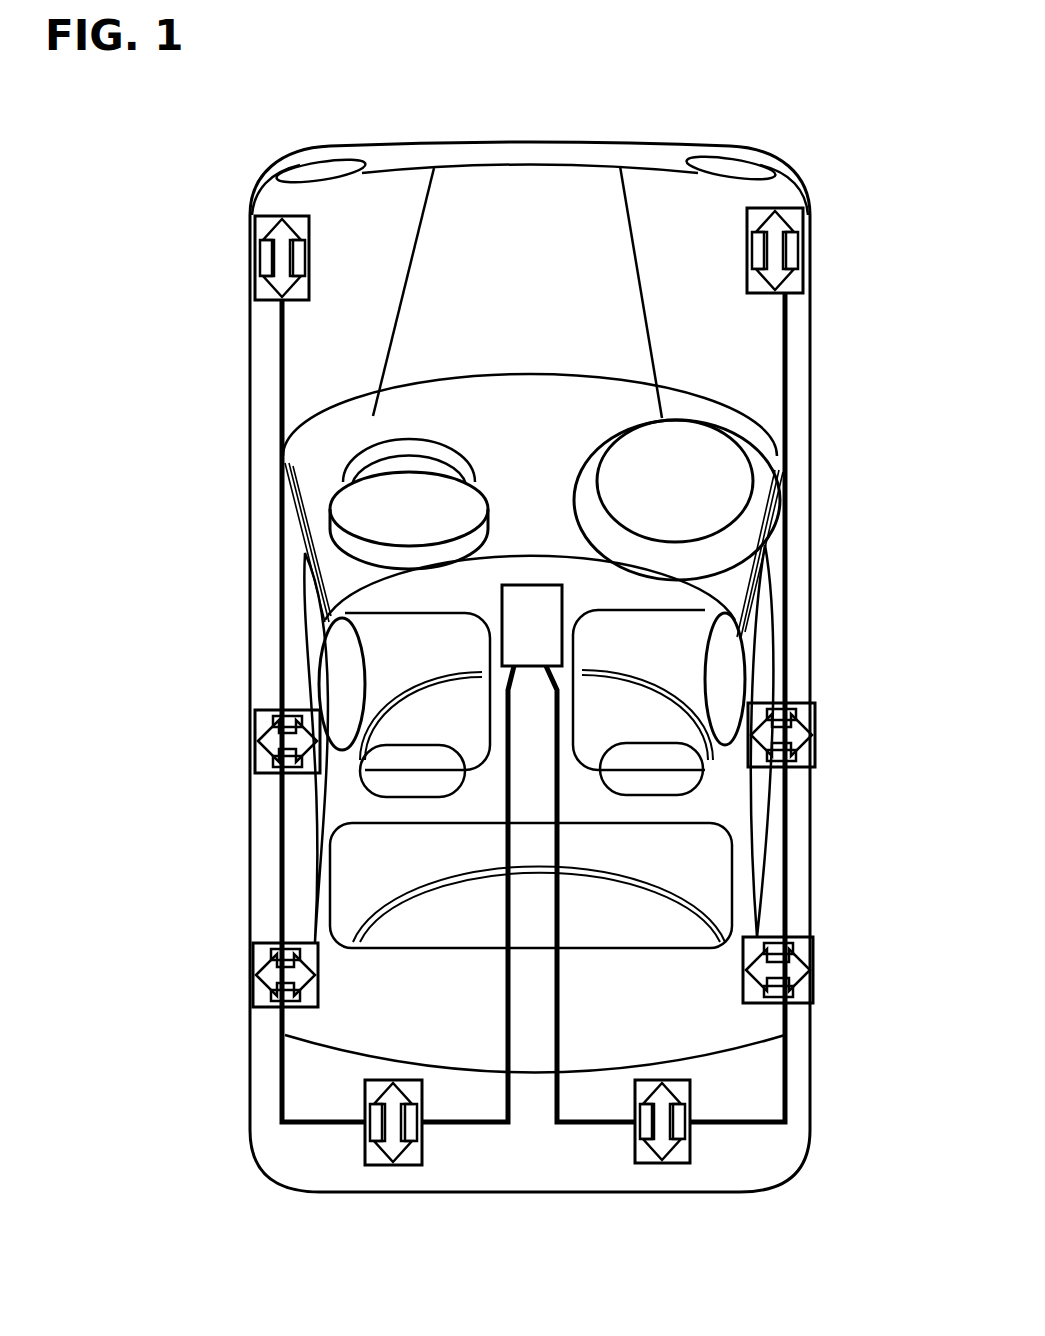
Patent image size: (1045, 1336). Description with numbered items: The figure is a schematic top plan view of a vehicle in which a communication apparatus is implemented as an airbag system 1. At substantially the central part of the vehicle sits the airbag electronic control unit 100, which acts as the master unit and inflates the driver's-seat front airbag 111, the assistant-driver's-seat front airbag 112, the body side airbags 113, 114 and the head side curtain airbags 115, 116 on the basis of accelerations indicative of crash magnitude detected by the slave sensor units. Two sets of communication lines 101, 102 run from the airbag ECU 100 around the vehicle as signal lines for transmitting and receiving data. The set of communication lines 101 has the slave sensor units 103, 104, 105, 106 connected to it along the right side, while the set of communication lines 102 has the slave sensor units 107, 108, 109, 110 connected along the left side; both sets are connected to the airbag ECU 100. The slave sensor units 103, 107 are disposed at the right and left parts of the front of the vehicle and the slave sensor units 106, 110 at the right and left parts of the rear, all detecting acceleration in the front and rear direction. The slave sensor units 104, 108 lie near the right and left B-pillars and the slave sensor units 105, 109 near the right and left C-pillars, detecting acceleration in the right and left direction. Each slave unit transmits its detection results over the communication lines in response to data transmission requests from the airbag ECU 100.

The airbag system 1 is at (842, 461).
The airbag electronic control unit (ECU) 100 is at (532, 585).
The set of communication lines 101 is at (795, 535).
The set of communication lines 102 is at (283, 557).
The slave sensor unit 103 is at (793, 249).
The slave sensor unit 104 is at (812, 712).
The slave sensor unit 105 is at (806, 944).
The slave sensor unit 106 is at (682, 1150).
The slave sensor unit 107 is at (267, 253).
The slave sensor unit 108 is at (270, 722).
The slave sensor unit 109 is at (270, 962).
The slave sensor unit 110 is at (375, 1155).
The front airbag for driver's seat 111 is at (717, 463).
The front airbag for assistant driver's seat 112 is at (372, 502).
The body side airbag 113 is at (725, 650).
The body side airbag 114 is at (343, 677).
The head side (curtain) airbag 115 is at (765, 840).
The head side (curtain) airbag 116 is at (300, 840).